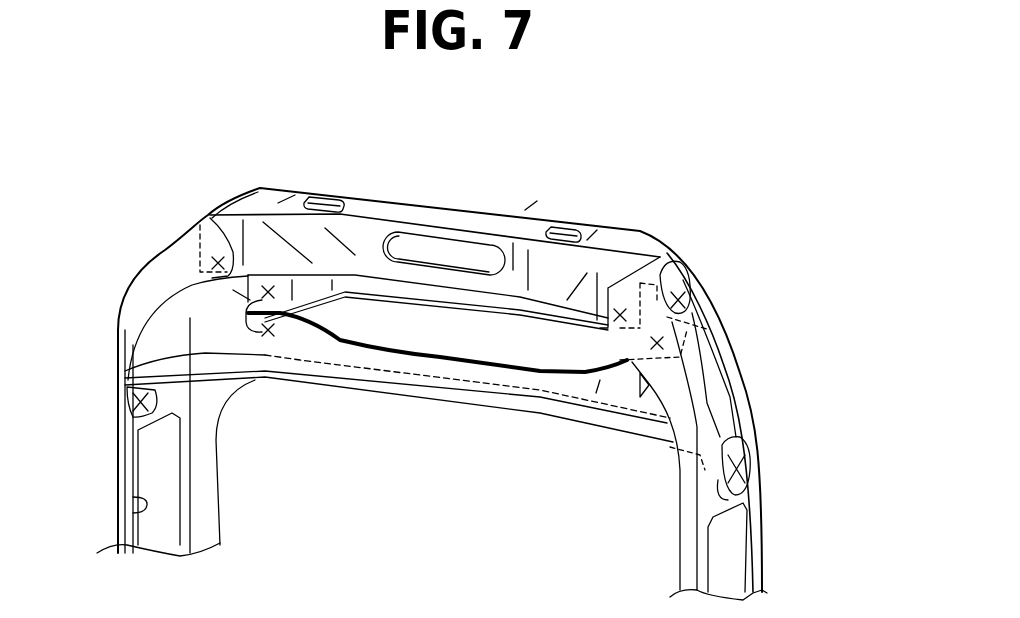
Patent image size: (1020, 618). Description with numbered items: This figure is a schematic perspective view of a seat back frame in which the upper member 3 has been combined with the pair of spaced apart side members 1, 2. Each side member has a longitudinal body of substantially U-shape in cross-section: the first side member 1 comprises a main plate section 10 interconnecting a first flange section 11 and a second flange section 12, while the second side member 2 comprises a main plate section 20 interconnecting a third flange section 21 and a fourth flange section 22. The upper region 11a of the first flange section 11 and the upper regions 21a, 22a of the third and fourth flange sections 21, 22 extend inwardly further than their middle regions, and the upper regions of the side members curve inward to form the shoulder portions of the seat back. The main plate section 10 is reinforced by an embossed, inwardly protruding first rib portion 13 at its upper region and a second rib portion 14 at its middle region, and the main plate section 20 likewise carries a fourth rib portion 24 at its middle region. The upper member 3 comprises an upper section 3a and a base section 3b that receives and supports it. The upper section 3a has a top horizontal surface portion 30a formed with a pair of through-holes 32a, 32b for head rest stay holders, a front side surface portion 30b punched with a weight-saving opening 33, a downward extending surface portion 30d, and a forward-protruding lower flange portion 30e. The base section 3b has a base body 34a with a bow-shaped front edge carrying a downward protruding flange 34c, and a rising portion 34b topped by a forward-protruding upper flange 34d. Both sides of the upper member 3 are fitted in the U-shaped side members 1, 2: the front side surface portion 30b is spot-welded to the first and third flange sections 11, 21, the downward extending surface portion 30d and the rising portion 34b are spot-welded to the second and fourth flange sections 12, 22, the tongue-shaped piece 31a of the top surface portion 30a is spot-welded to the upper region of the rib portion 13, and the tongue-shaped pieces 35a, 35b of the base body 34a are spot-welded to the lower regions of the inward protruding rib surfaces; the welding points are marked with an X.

The first side member 1 is at (700, 250).
The second side member 2 is at (120, 360).
The upper member 3 is at (399, 197).
The upper section 3a is at (287, 178).
The base section 3b is at (393, 398).
The main plate section 10 is at (753, 493).
The first flange section 11 is at (680, 538).
The upper region of first flange section 11a is at (620, 333).
The second flange section 12 is at (715, 292).
The first vertically extending rib portion 13 is at (725, 368).
The second vertically extending rib portion 14 is at (727, 547).
The main plate section 20 is at (115, 452).
The third flange section 21 is at (143, 518).
The upper region of third flange section 21a is at (190, 250).
The fourth flange section 22 is at (208, 458).
The upper region of fourth flange section 22a is at (233, 290).
The fourth vertically extending rib portion 24 is at (160, 513).
The top horizontal surface portion 30a is at (462, 213).
The front side surface portion 30b is at (366, 258).
The downward extending surface portion 30d is at (500, 300).
The lower flange portion 30e is at (213, 290).
The tongue-shaped piece 31a is at (705, 330).
The through-hole 32a is at (563, 228).
The through-hole 32b is at (324, 198).
The opening 33 is at (445, 258).
The base body 34a is at (330, 370).
The rising portion 34b is at (487, 373).
The downward protruding flange 34c is at (548, 414).
The upper flange 34d is at (246, 318).
The tongue-shaped piece 35a is at (713, 480).
The tongue-shaped piece 35b is at (155, 393).